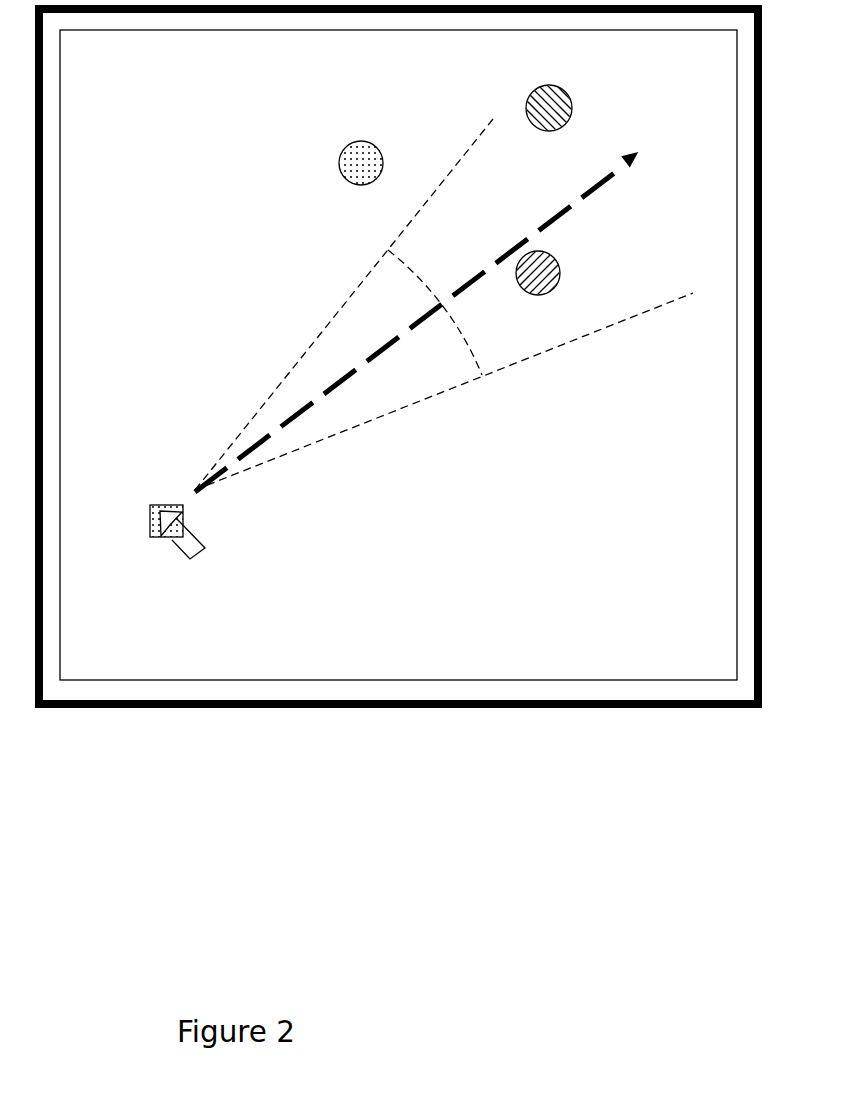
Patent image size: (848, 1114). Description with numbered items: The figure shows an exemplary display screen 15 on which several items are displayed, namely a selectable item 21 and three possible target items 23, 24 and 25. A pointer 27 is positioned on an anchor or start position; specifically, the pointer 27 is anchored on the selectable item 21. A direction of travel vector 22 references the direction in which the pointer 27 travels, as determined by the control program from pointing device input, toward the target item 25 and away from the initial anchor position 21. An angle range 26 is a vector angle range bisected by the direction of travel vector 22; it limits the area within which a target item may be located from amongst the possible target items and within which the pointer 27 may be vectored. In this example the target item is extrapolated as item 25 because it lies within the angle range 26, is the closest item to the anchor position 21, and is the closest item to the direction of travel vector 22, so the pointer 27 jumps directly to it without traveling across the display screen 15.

The display screen 15 is at (400, 722).
The selectable item 21 is at (155, 548).
The direction of travel vector 22 is at (620, 186).
The item 23 is at (317, 166).
The item 24 is at (585, 96).
The target item 25 is at (583, 273).
The angle range 26 is at (504, 360).
The pointer 27 is at (219, 555).